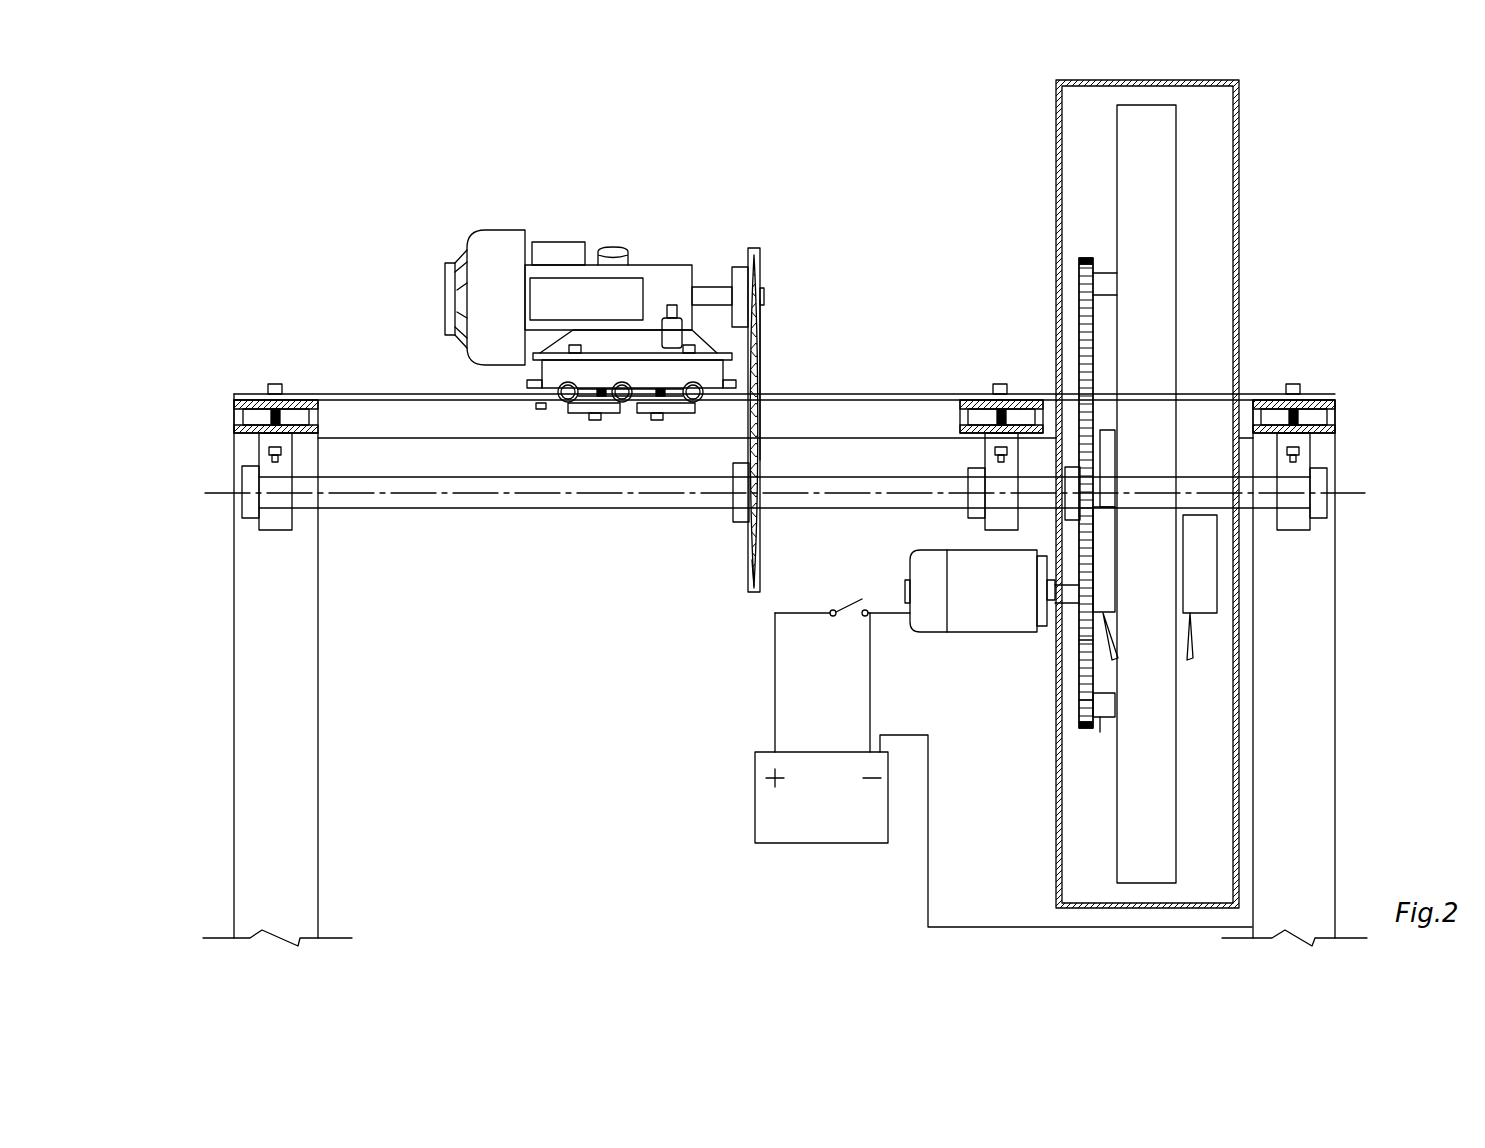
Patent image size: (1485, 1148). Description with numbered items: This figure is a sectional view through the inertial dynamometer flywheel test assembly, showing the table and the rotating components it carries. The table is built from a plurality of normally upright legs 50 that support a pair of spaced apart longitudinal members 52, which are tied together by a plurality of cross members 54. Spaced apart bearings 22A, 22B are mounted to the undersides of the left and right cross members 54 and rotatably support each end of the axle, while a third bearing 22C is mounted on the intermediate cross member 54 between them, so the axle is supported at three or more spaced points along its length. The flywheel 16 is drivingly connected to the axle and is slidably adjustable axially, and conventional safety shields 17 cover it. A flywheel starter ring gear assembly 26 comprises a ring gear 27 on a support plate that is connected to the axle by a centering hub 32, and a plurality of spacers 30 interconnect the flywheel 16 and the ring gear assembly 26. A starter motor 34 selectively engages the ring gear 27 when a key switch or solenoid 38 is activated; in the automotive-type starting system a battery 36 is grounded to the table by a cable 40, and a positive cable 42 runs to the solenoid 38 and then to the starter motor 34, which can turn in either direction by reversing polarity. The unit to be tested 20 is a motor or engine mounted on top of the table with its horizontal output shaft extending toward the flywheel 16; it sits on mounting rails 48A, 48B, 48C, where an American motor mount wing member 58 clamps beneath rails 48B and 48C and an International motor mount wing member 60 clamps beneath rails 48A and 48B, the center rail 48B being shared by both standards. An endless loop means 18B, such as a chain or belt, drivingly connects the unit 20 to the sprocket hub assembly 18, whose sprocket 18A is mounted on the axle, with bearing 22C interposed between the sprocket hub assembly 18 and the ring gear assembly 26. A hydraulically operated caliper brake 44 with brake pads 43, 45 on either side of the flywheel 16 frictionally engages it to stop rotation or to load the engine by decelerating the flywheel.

The flywheel 16 is at (1170, 205).
The safety shields 17 is at (1237, 133).
The sprocket hub assembly 18 is at (760, 547).
The sprocket 18A is at (752, 590).
The endless loop means 18B is at (762, 380).
The unit to be tested 20 is at (655, 268).
The bearing 22A is at (272, 528).
The bearing 22B is at (1300, 528).
The bearing 22C is at (987, 531).
The flywheel starter ring gear assembly 26 is at (1082, 695).
The ring gear 27 is at (1084, 655).
The spacers 30 is at (1100, 275).
The centering hub 32 is at (1072, 467).
The starter motor 34 is at (978, 628).
The battery 36 is at (820, 840).
The key switch or solenoid 38 is at (847, 605).
The cable 40 is at (928, 875).
The positive cable 42 is at (775, 690).
The brake pad 43 is at (1205, 590).
The caliper brake 44 is at (1190, 613).
The brake pad 45 is at (1105, 590).
The mounting rail 48A is at (702, 388).
The mounting rail 48B is at (624, 404).
The mounting rail 48C is at (565, 402).
The legs 50 is at (310, 650).
The longitudinal members 52 is at (345, 396).
The cross members 54 is at (254, 400).
The American motor mount wing member 58 is at (582, 412).
The International motor mount wing member 60 is at (678, 412).